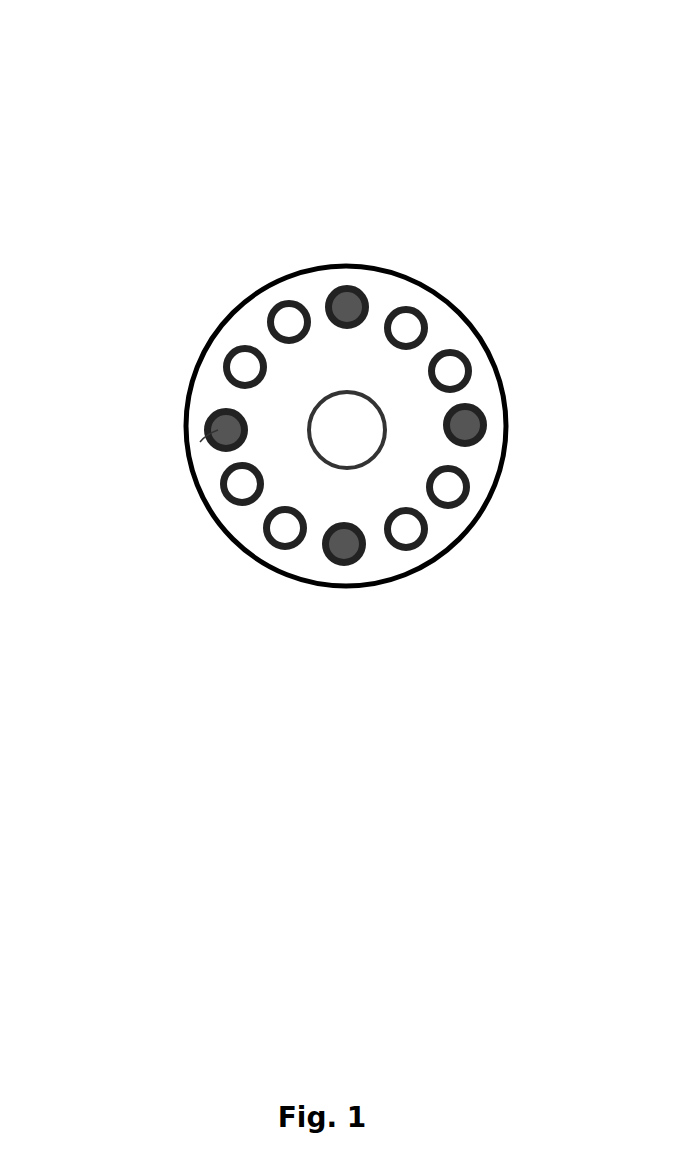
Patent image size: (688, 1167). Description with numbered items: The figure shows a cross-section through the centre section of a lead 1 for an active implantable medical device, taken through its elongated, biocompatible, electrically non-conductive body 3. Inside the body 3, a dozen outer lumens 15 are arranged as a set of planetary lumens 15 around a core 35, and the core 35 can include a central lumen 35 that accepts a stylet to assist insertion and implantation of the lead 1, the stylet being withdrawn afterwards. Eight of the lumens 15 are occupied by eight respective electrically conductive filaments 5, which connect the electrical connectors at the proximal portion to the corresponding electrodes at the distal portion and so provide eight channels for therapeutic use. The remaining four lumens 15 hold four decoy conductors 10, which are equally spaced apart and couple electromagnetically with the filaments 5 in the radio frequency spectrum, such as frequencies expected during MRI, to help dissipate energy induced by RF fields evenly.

The lead 1 is at (325, 176).
The elongated body 3 is at (382, 302).
The electrically conductive filaments 5 is at (288, 320).
The decoy conductor 10 is at (345, 311).
The lumens 15 is at (222, 436).
The core 35 is at (307, 418).